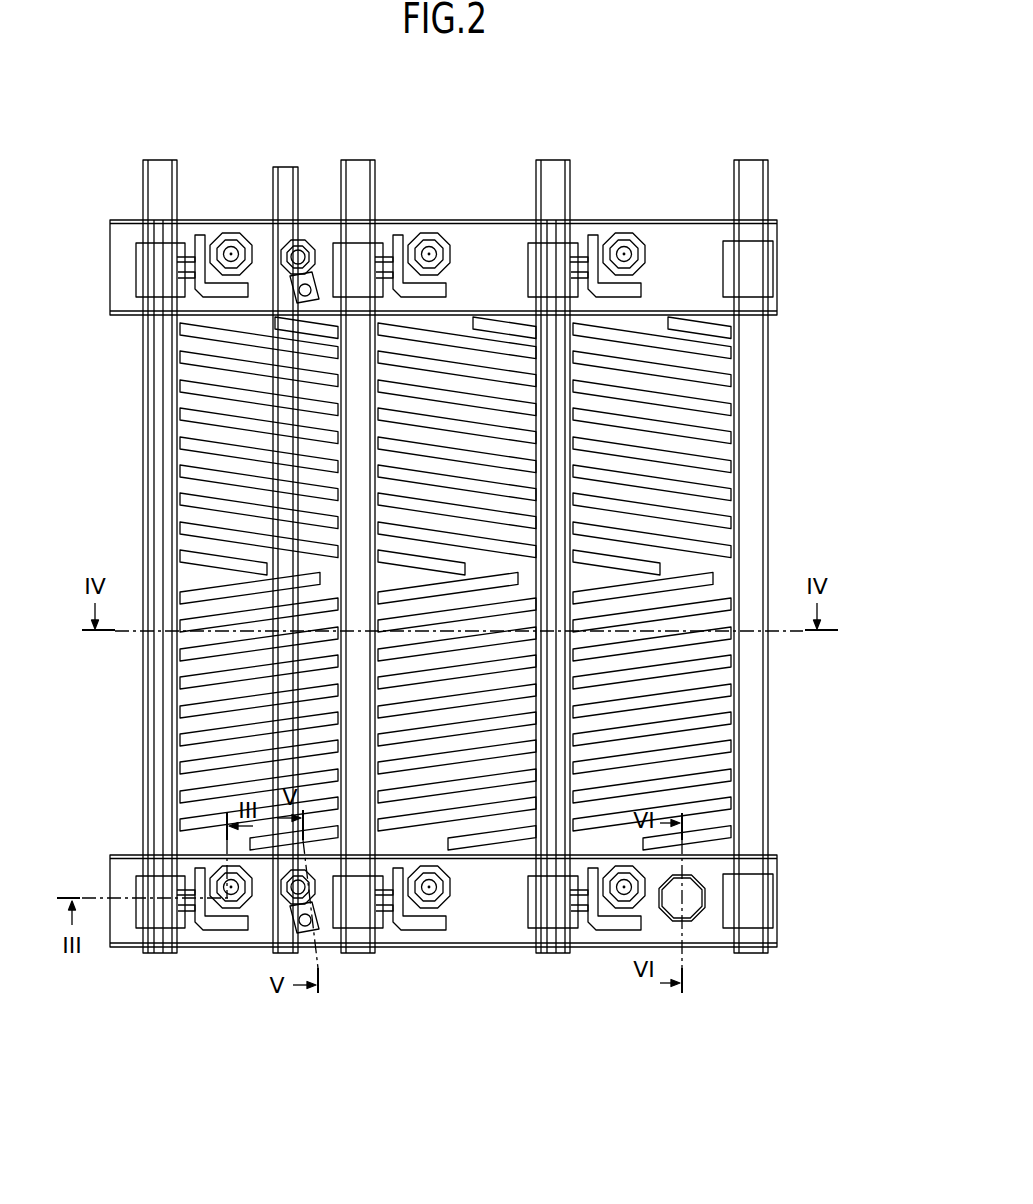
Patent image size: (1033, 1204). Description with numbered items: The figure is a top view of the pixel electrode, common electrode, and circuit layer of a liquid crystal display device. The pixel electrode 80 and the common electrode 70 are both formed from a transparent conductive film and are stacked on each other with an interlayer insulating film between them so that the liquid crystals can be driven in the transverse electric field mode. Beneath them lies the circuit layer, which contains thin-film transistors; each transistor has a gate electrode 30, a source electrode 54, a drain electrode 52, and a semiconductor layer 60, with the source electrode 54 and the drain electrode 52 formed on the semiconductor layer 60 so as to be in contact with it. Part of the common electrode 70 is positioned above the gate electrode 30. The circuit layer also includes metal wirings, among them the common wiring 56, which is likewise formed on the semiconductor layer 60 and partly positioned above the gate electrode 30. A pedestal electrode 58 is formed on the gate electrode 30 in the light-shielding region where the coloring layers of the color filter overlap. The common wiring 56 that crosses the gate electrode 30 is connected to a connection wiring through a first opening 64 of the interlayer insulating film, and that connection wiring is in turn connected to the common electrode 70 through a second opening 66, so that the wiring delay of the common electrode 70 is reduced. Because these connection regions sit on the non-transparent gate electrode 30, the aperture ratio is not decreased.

The gate electrode 30 is at (680, 278).
The drain electrode 52 is at (163, 162).
The source electrode 54 is at (207, 930).
The common wiring 56 is at (287, 168).
The pedestal electrode 58 is at (697, 913).
The semiconductor layer 60 is at (140, 915).
The first opening 64 is at (230, 895).
The second opening 66 is at (317, 918).
The common electrode 70 is at (250, 927).
The pixel electrode 80 is at (313, 937).